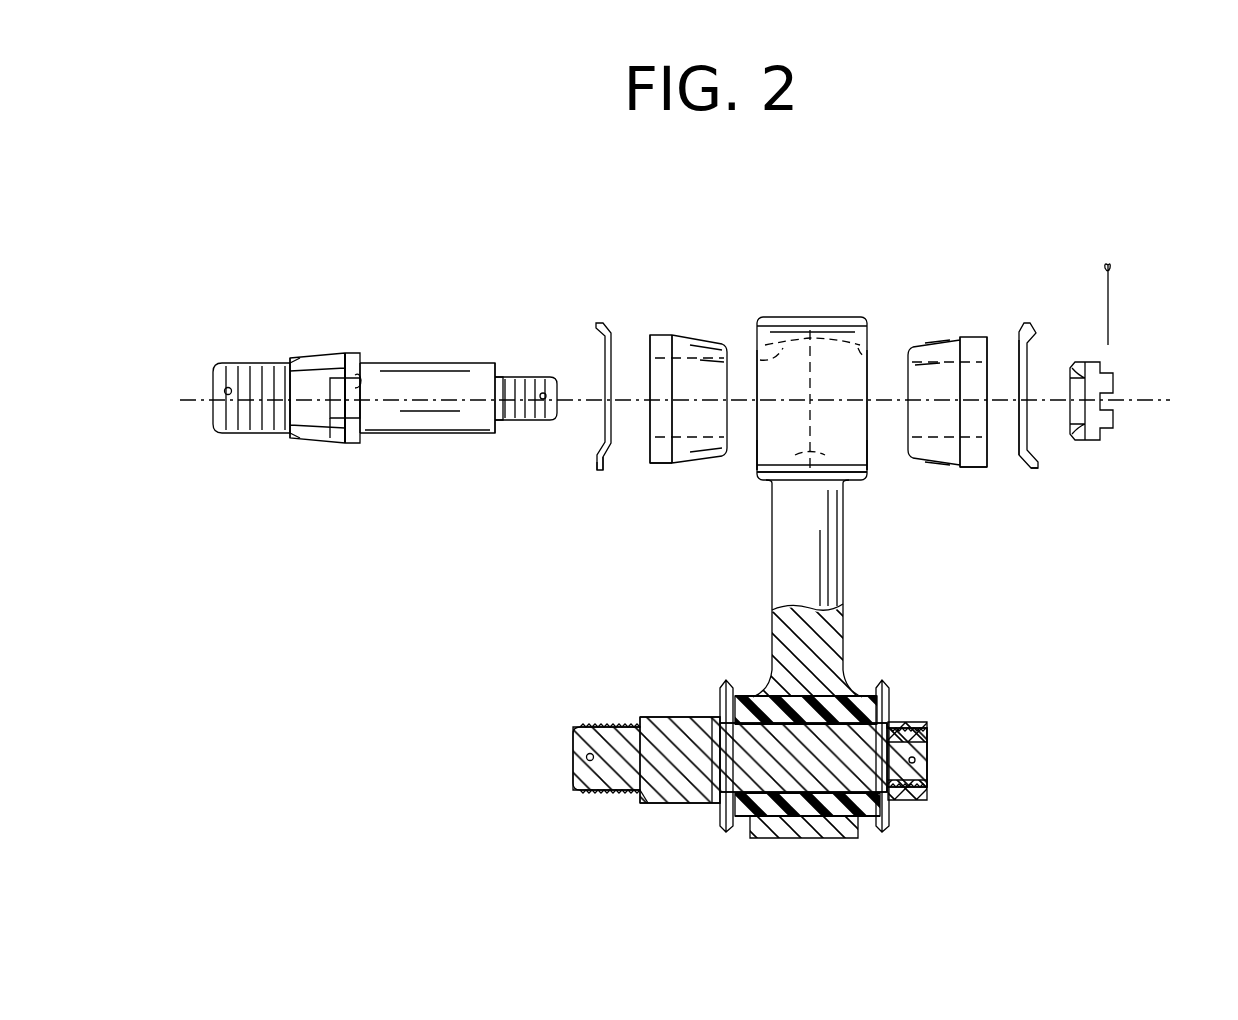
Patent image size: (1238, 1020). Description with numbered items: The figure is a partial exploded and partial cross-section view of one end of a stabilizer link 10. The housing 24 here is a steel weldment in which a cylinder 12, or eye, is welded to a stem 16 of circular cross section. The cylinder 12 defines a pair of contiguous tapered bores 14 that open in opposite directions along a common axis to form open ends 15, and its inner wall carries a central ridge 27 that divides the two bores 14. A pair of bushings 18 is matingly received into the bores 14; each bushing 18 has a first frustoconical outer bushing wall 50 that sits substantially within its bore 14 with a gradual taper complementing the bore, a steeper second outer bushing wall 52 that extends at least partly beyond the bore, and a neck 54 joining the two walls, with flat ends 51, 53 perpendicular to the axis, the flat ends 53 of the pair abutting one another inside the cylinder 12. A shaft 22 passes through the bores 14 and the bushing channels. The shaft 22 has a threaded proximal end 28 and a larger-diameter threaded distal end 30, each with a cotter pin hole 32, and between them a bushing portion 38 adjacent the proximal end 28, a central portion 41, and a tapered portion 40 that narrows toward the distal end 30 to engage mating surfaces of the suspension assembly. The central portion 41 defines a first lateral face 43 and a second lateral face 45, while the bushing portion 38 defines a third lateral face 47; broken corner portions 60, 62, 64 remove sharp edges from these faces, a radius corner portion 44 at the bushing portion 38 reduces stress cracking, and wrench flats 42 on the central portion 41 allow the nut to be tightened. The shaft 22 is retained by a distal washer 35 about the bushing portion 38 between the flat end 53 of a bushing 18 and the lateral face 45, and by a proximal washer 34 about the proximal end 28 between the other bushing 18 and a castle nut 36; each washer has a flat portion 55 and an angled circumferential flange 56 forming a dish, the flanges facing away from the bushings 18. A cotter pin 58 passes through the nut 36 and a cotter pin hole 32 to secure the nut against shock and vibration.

The stabilizer link 10 is at (912, 210).
The cylinder 12 is at (810, 316).
The tapered bore 14 is at (752, 365).
The open end 15 is at (752, 454).
The stem 16 is at (843, 572).
The bushing 18 is at (659, 470).
The shaft 22 is at (325, 452).
The housing 24 is at (848, 555).
The central ridge 27 is at (765, 488).
The proximal end 28 is at (525, 420).
The distal end 30 is at (232, 433).
The cotter pin hole 32 is at (222, 390).
The proximal washer 34 is at (1034, 472).
The distal washer 35 is at (597, 472).
The nut 36 is at (1118, 363).
The bushing portion 38 is at (440, 363).
The tapered portion 40 is at (303, 352).
The central portion 41 is at (348, 355).
The wrench flat 42 is at (361, 372).
The first lateral face 43 is at (292, 440).
The radius corner portion 44 is at (356, 384).
The second lateral face 45 is at (376, 430).
The third lateral face 47 is at (492, 365).
The first outer bushing wall 50 is at (711, 347).
The flat end 51 is at (733, 362).
The second outer bushing wall 52 is at (660, 345).
The flat end 53 is at (654, 438).
The neck 54 is at (680, 337).
The flat portion 55 is at (597, 457).
The circumferential flange 56 is at (601, 326).
The cotter pin 58 is at (1112, 266).
The broken corner portion 60 is at (292, 352).
The broken corner portion 62 is at (355, 443).
The broken corner portion 64 is at (500, 433).